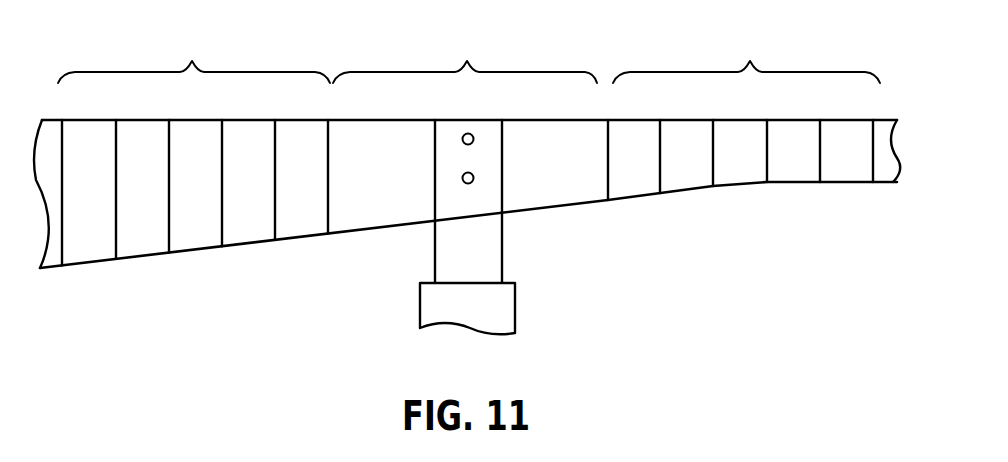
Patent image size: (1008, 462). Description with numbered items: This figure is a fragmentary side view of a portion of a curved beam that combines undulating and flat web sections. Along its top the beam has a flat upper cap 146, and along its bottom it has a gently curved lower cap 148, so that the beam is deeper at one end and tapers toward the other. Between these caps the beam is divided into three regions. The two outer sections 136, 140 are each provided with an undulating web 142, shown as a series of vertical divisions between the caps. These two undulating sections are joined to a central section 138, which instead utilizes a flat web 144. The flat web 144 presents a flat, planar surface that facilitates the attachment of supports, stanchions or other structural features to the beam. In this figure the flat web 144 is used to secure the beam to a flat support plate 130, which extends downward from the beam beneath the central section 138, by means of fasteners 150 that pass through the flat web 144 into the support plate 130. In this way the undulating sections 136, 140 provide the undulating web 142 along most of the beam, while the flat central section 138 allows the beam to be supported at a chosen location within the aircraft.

The flat support plate 130 is at (478, 260).
The beam section 136 is at (194, 56).
The central section 138 is at (465, 56).
The beam section 140 is at (746, 56).
The undulating web 142 is at (196, 234).
The flat web 144 is at (377, 200).
The flat upper cap 146 is at (195, 120).
The curved lower cap 148 is at (100, 265).
The fasteners 150 is at (483, 139).